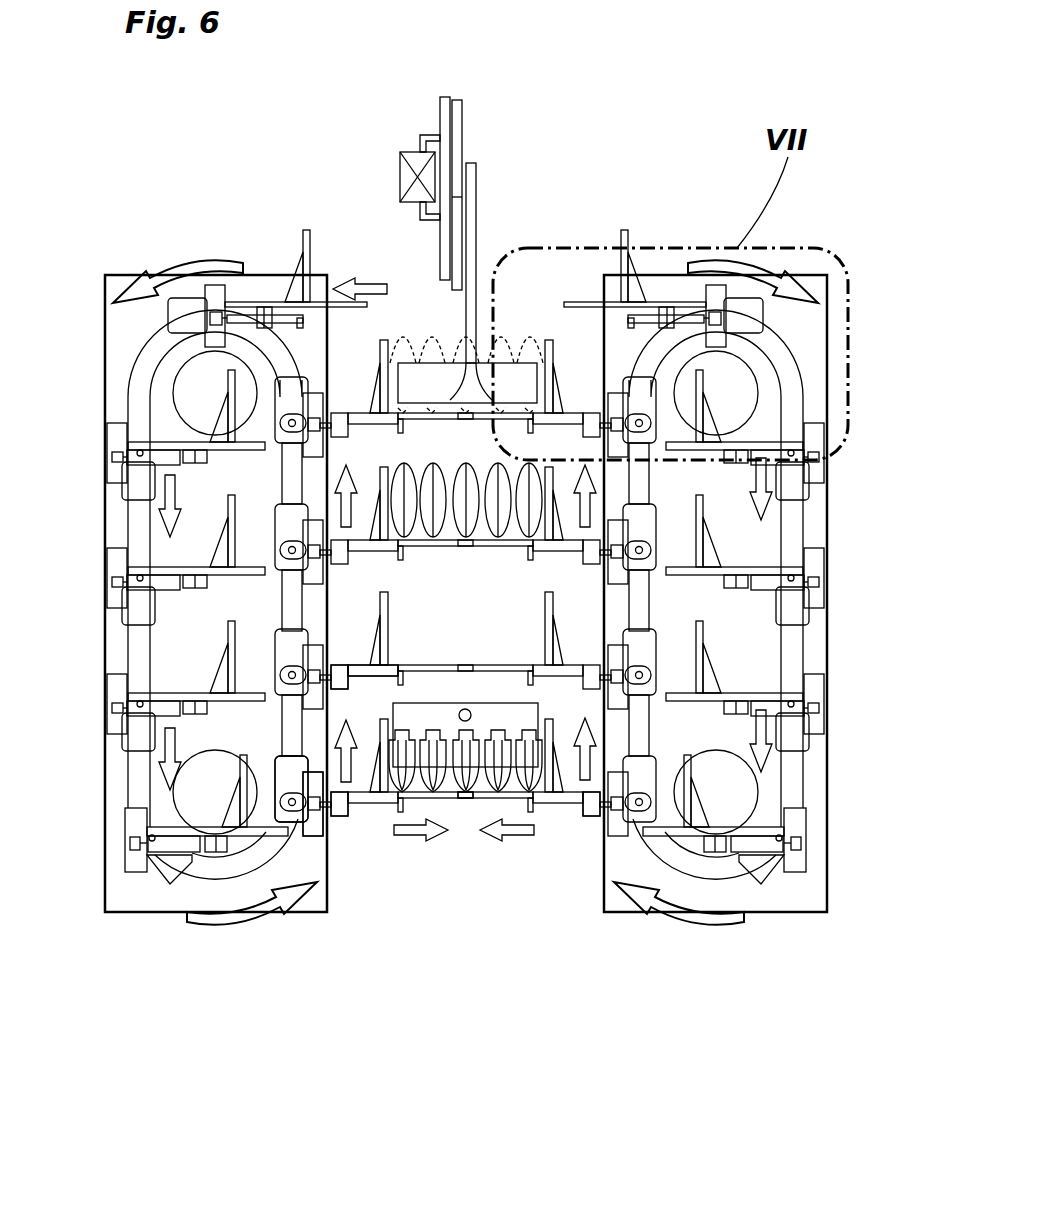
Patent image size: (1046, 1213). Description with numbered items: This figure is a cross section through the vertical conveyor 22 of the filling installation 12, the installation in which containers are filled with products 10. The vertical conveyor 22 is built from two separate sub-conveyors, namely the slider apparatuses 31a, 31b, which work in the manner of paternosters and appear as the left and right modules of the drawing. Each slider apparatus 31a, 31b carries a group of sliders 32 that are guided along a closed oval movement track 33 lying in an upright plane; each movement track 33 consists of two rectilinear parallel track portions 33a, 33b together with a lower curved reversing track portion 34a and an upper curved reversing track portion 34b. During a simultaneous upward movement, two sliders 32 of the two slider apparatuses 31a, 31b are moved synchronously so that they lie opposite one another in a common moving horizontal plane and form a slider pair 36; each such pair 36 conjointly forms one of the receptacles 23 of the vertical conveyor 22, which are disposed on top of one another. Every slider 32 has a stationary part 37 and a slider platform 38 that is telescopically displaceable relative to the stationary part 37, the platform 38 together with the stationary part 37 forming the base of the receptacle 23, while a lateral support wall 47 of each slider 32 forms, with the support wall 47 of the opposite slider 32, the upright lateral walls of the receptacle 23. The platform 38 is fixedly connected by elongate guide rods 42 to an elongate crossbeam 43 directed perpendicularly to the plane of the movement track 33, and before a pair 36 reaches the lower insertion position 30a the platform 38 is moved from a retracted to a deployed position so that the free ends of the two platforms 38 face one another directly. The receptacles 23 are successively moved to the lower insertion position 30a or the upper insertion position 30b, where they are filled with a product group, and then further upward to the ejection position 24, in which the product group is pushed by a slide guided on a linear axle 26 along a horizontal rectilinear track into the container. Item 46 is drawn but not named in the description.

The product 10 is at (453, 795).
The filling installation 12 is at (518, 699).
The vertical conveyor 22 is at (176, 237).
The receptacle 23 is at (370, 823).
The ejection position 24 is at (462, 428).
The linear axle 26 is at (400, 178).
The lower insertion position 30a is at (482, 835).
The upper insertion position 30b is at (472, 553).
The slider apparatus 31a is at (148, 932).
The slider apparatus 31b is at (782, 930).
The slider 32 is at (563, 795).
The movement track 33 is at (137, 660).
The rectilinear track portion 33a is at (290, 610).
The rectilinear track portion 33b is at (137, 642).
The lower reversing track portion 34a is at (207, 875).
The upper reversing track portion 34b is at (205, 312).
The slider pair 36 is at (465, 808).
The stationary part 37 is at (337, 680).
The slider platform 38 is at (428, 663).
The guide rod 42 is at (370, 687).
The crossbeam 43 is at (310, 832).
The chain link 46 is at (313, 848).
The support wall 47 is at (370, 347).